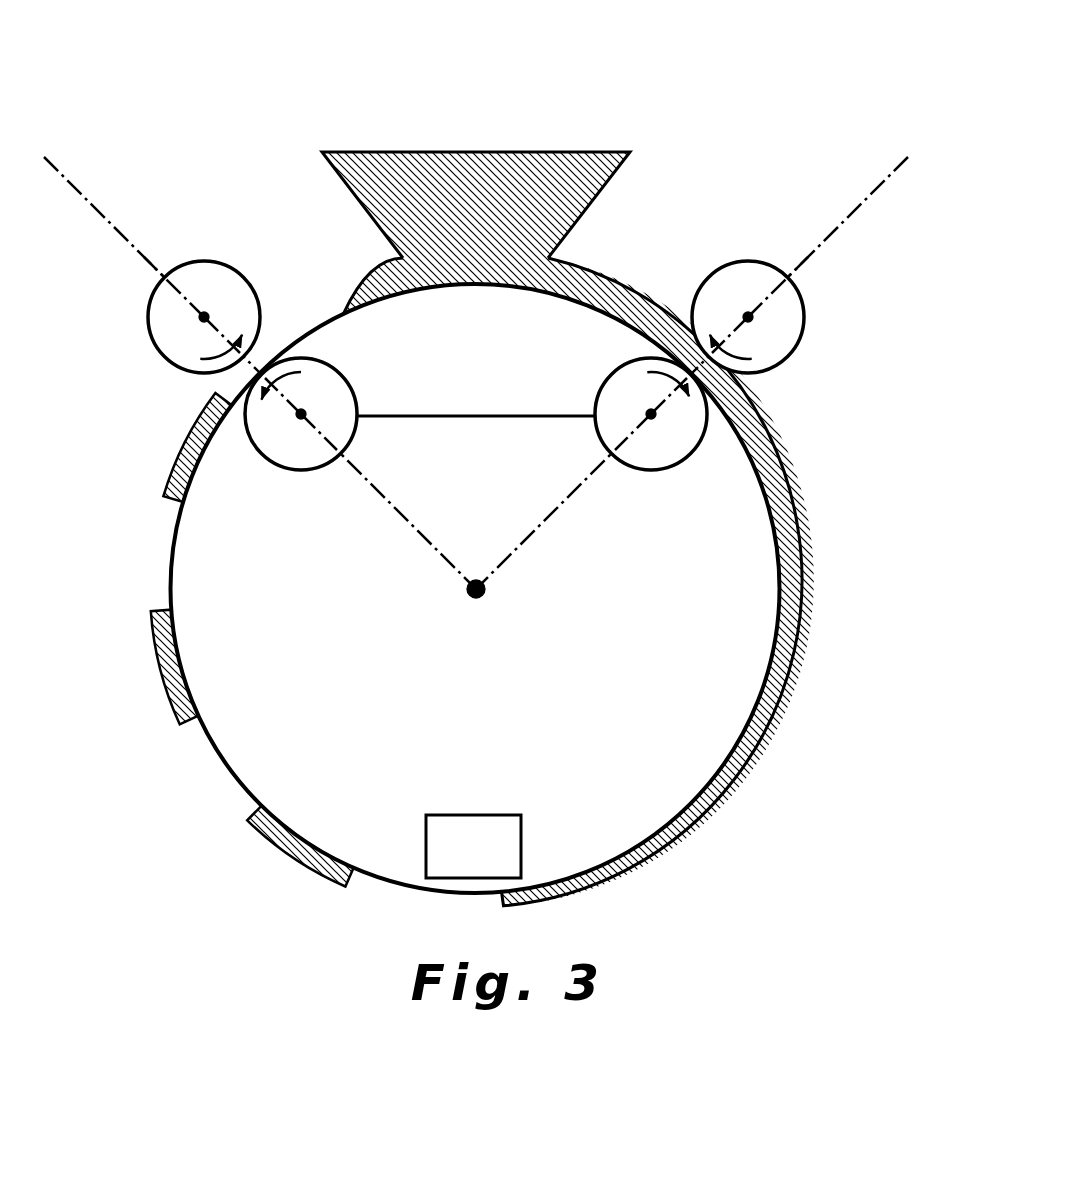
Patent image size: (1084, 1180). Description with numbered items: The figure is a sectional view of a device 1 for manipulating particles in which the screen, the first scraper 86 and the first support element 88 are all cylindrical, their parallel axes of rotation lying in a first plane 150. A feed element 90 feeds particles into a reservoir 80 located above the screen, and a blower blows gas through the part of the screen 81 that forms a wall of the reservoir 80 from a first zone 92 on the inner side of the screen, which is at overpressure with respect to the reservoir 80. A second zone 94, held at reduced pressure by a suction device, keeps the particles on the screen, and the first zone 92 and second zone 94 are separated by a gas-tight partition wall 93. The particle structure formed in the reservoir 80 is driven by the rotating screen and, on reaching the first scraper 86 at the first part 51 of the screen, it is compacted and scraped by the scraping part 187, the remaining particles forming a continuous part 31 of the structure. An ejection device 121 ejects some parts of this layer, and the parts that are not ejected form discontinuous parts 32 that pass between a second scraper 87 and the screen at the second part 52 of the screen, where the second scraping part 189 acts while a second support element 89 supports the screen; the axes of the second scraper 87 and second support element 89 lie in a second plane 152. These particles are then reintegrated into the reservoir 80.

The device for manipulating particles 1 is at (705, 127).
The feed element 90 is at (532, 146).
The reservoir 80 is at (607, 553).
The continuous part of the structure 31 is at (797, 592).
The part of the screen 81 is at (477, 296).
The second zone 94 is at (555, 652).
The first zone 92 is at (463, 402).
The gas-tight partition wall 93 is at (482, 418).
The discontinuous parts of the structure 32 is at (152, 655).
The first plane 150 is at (847, 222).
The second plane 152 is at (410, 525).
The second scraper 87 is at (148, 332).
The first scraper 86 is at (805, 330).
The second support element 89 is at (290, 468).
The first support element 88 is at (653, 470).
The ejection device 121 is at (490, 813).
The second part of the screen 52 is at (238, 375).
The first part of the screen 51 is at (697, 375).
The second scraping part 189 is at (258, 351).
The scraping part 187 is at (690, 340).